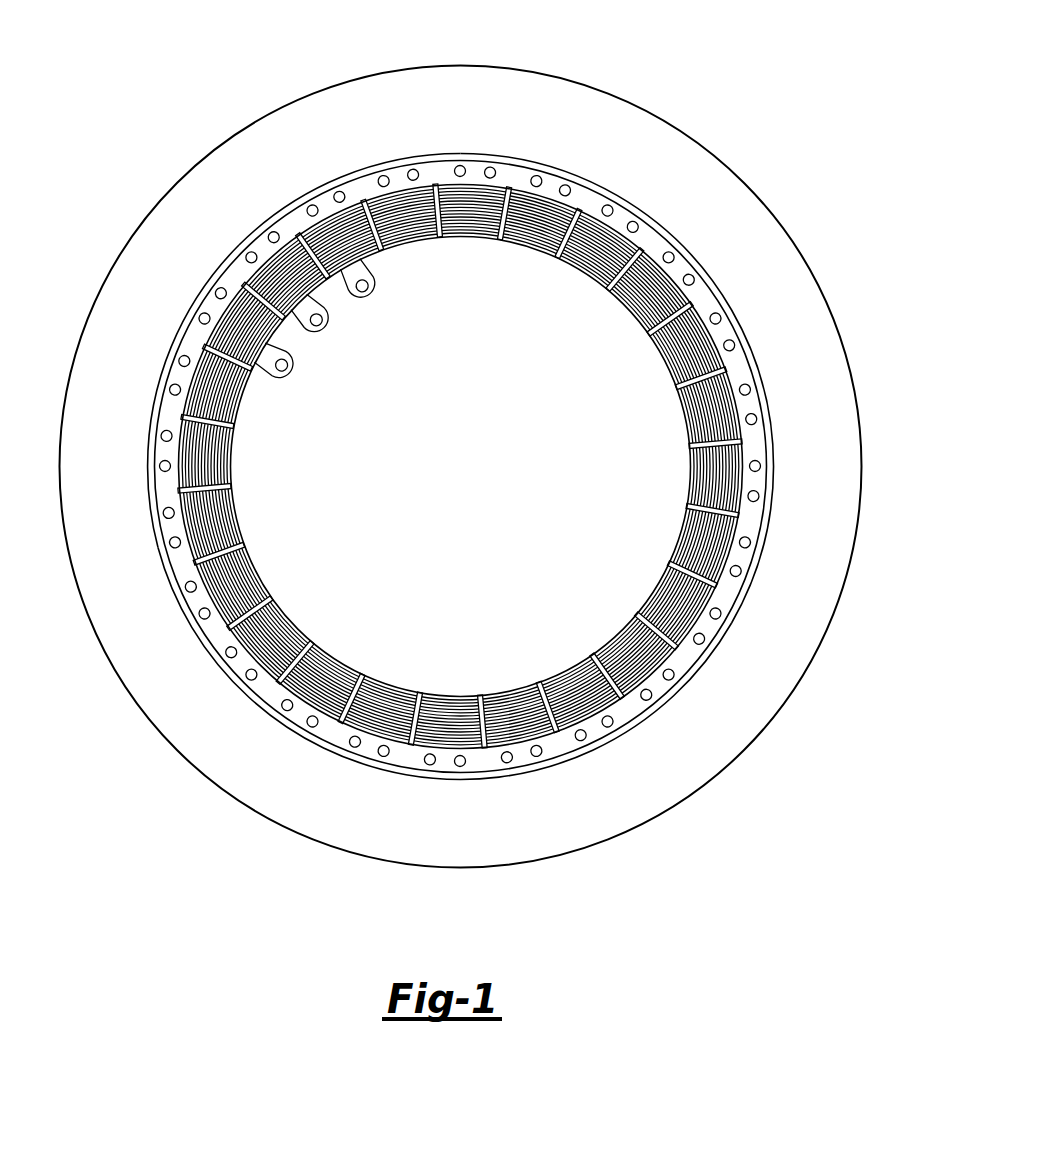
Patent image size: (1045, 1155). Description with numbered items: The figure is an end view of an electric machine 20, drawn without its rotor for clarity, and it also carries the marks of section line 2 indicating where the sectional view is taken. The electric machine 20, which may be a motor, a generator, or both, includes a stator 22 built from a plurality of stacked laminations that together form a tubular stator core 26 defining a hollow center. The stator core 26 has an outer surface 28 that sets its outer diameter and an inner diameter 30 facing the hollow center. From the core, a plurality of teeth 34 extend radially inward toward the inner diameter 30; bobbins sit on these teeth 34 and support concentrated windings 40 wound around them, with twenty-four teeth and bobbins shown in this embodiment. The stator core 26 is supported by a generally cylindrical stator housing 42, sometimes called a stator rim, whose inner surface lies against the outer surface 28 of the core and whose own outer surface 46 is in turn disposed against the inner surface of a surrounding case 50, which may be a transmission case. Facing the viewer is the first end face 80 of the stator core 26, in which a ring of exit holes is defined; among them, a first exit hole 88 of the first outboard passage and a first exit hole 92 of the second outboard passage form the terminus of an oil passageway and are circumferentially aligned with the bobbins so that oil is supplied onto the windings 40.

The electric machine 20 is at (716, 86).
The stator 22 is at (162, 375).
The stator core 26 is at (525, 176).
The outer surface 28 is at (468, 779).
The inner diameter 30 is at (597, 262).
The teeth 34 is at (628, 650).
The windings 40 is at (695, 545).
The stator housing 42 is at (262, 708).
The outer surface 46 is at (232, 245).
The case 50 is at (278, 158).
The first end face 80 is at (753, 447).
The first exit hole 88 is at (692, 278).
The first exit hole 92 is at (670, 252).
The section line 2- 2 is at (487, 40).